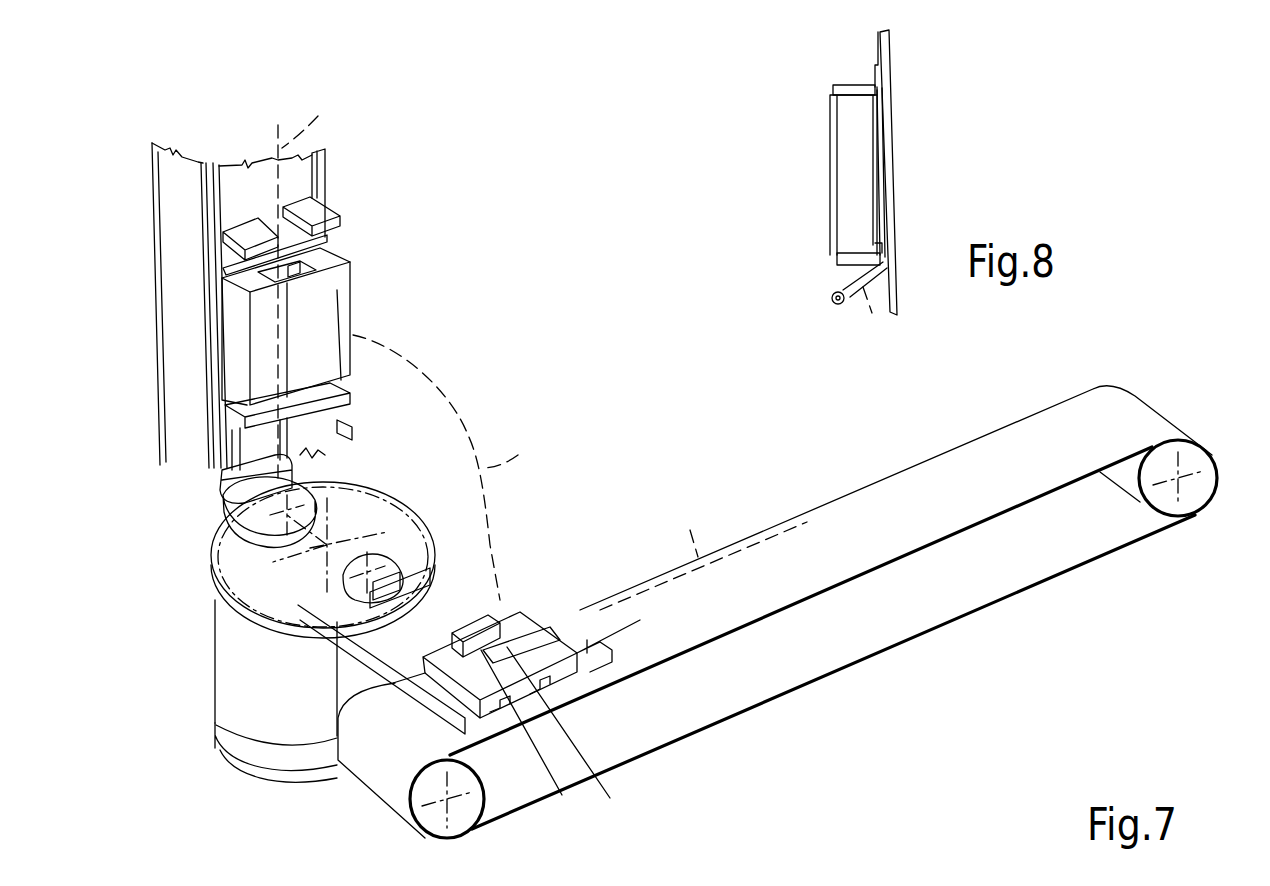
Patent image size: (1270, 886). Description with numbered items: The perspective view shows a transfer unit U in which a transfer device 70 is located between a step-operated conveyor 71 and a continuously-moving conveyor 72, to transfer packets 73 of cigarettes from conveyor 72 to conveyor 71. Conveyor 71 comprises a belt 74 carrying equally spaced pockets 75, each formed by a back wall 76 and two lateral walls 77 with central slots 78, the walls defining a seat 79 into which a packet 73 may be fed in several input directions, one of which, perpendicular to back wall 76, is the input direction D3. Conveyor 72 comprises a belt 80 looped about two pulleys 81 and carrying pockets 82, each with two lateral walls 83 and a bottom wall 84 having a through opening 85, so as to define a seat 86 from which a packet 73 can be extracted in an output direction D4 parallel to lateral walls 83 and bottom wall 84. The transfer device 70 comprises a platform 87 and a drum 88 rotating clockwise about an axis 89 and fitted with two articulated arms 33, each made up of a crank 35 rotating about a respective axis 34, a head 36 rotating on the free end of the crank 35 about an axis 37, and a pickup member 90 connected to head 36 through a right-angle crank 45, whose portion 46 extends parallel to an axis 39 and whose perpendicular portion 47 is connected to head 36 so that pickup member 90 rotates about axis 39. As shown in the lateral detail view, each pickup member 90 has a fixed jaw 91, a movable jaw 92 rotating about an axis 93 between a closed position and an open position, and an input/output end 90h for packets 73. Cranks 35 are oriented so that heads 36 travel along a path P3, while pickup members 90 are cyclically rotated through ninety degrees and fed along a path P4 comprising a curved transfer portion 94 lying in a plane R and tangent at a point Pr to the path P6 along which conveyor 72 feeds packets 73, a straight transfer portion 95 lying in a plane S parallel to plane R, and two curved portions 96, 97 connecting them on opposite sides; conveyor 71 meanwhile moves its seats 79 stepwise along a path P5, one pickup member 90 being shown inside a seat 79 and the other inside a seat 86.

In FIG. 7, the transfer device 70 is at (169, 662).
In FIG. 7, the step-operated conveyor 71 is at (372, 228).
In FIG. 7, the continuously-moving conveyor 72 is at (934, 667).
In FIG. 7, the packet of cigarettes 73 is at (365, 320).
In FIG. 8, the packet of cigarettes 73 is at (847, 130).
In FIG. 7, the belt 74 is at (217, 177).
In FIG. 8, the belt 74 is at (890, 103).
In FIG. 7, the pocket 75 is at (336, 184).
In FIG. 8, the pocket 75 is at (819, 125).
In FIG. 7, the back wall 76 is at (225, 198).
In FIG. 8, the back wall 76 is at (883, 130).
In FIG. 7, the lateral wall 77 is at (225, 240).
In FIG. 8, the lateral wall 77 is at (852, 88).
In FIG. 7, the central slot 78 is at (298, 268).
In FIG. 7, the seat 79 is at (336, 168).
In FIG. 8, the seat 79 is at (813, 147).
In FIG. 7, the belt 80 is at (790, 692).
In FIG. 7, the pulley 81 is at (1190, 505).
In FIG. 7, the pocket 82 is at (575, 625).
In FIG. 7, the lateral wall 83 is at (555, 742).
In FIG. 7, the bottom wall 84 is at (597, 660).
In FIG. 7, the through opening 85 is at (556, 702).
In FIG. 7, the seat 86 is at (567, 735).
In FIG. 7, the platform 87 is at (240, 750).
In FIG. 7, the drum 88 is at (223, 686).
In FIG. 7, the axis 89 is at (333, 585).
In FIG. 7, the pickup member 90 is at (241, 395).
In FIG. 8, the pickup member 90 is at (806, 175).
In FIG. 8, the input/output end 90h is at (823, 208).
In FIG. 8, the fixed jaw 91 is at (837, 233).
In FIG. 8, the movable jaw 92 is at (877, 267).
In FIG. 8, the axis 93 is at (836, 300).
In FIG. 7, the curved transfer portion 94 is at (315, 779).
In FIG. 7, the straight transfer portion 95 is at (232, 360).
In FIG. 7, the curved portion 96 is at (330, 565).
In FIG. 7, the curved portion 97 is at (468, 412).
In FIG. 7, the articulated arm 33 is at (230, 545).
In FIG. 7, the axis 34 is at (323, 560).
In FIG. 7, the crank 35 is at (240, 512).
In FIG. 7, the head 36 is at (228, 480).
In FIG. 7, the axis 37 is at (240, 460).
In FIG. 7, the axis 39 is at (300, 455).
In FIG. 7, the right-angle crank 45 is at (390, 655).
In FIG. 7, the portion 46 is at (520, 630).
In FIG. 7, the portion 47 is at (377, 615).
In FIG. 7, the plane S is at (265, 375).
In FIG. 7, the transfer unit U is at (583, 462).
In FIG. 7, the plane R is at (612, 725).
In FIG. 7, the point Pr is at (531, 741).
In FIG. 7, the path P3 is at (215, 600).
In FIG. 7, the path P4 is at (511, 446).
In FIG. 7, the path P5 is at (309, 284).
In FIG. 7, the path P6 is at (703, 554).
In FIG. 7, the input direction D3 is at (373, 317).
In FIG. 7, the output direction D4 is at (633, 820).